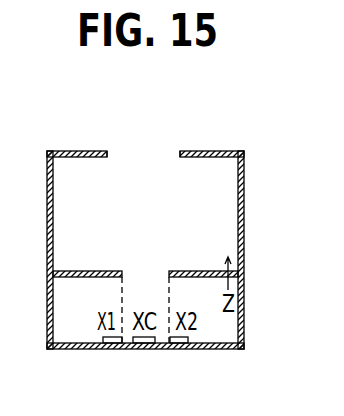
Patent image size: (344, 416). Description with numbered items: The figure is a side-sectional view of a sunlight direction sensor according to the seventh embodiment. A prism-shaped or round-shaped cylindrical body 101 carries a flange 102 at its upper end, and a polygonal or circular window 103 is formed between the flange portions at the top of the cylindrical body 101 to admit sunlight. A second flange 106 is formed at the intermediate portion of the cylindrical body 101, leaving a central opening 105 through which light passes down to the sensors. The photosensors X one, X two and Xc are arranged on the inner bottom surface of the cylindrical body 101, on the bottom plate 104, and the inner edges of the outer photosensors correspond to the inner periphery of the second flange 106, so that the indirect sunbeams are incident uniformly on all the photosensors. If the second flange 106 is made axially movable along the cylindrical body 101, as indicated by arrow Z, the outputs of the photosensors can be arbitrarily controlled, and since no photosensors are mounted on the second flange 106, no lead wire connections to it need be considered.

The cylindrical body 101 is at (244, 209).
The flange 102 is at (203, 150).
The window 103 is at (144, 160).
The bottom plate 104 is at (209, 350).
The intermediate opening 105 is at (142, 268).
The second flange 106 is at (199, 271).